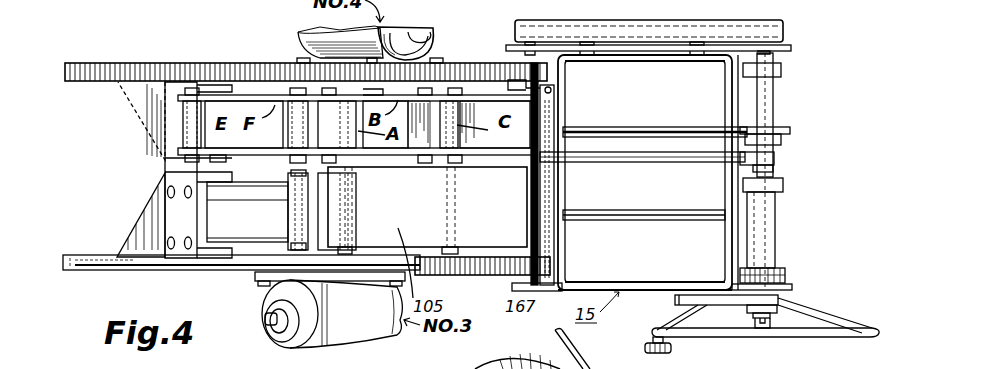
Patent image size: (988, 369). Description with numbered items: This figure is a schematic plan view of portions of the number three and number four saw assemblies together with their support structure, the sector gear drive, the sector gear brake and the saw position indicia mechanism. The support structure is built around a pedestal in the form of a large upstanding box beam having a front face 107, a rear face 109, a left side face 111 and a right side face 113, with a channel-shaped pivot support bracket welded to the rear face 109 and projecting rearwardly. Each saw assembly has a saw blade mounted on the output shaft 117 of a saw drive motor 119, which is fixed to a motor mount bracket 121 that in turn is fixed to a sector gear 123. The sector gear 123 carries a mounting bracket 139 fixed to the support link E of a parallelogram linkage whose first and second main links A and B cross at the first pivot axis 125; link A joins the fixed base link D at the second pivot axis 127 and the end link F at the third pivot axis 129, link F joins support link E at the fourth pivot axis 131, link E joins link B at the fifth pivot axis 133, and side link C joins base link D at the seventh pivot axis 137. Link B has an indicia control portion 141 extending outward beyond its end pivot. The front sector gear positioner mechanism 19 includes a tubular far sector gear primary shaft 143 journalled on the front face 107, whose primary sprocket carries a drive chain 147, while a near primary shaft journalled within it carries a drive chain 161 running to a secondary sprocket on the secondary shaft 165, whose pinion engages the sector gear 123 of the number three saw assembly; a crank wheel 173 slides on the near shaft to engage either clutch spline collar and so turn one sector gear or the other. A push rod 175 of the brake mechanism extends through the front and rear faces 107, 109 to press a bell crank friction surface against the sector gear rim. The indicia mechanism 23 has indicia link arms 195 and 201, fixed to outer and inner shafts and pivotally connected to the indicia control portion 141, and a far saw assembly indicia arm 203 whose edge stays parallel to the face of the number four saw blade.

The front sector gear positioner mechanism 19 is at (783, 247).
The front saw position indicia mechanism 23 is at (664, 305).
The front face 107 is at (722, 78).
The rear face 109 is at (567, 262).
The left side face 111 is at (635, 280).
The right side face 113 is at (635, 62).
The output shaft 117 is at (266, 318).
The saw drive motor 119 is at (437, 35).
The motor mount bracket 121 is at (262, 282).
The sector gear 123 is at (122, 63).
The first pivot axis 125 is at (318, 105).
The second pivot axis 127 is at (352, 216).
The third pivot axis 129 is at (290, 92).
The fourth pivot axis 131 is at (182, 85).
The fifth pivot axis 133 is at (227, 110).
The seventh pivot axis 137 is at (452, 216).
The mounting bracket 139 is at (143, 98).
The indicia control portion 141 is at (633, 162).
The far sector gear primary shaft 143 is at (770, 105).
The drive chain 147 is at (732, 44).
The drive chain 161 is at (565, 20).
The secondary shaft 165 is at (540, 227).
The crank wheel 173 is at (782, 338).
The push rod 175 is at (648, 128).
The indicia link arm 195 is at (770, 185).
The indicia link arm 201 is at (776, 160).
The far saw assembly indicia arm 203 is at (687, 305).